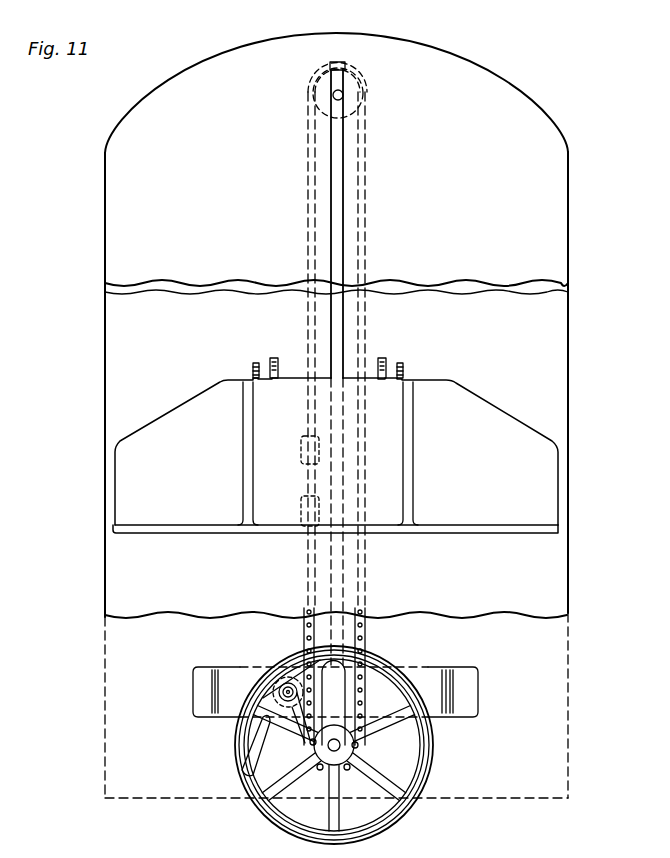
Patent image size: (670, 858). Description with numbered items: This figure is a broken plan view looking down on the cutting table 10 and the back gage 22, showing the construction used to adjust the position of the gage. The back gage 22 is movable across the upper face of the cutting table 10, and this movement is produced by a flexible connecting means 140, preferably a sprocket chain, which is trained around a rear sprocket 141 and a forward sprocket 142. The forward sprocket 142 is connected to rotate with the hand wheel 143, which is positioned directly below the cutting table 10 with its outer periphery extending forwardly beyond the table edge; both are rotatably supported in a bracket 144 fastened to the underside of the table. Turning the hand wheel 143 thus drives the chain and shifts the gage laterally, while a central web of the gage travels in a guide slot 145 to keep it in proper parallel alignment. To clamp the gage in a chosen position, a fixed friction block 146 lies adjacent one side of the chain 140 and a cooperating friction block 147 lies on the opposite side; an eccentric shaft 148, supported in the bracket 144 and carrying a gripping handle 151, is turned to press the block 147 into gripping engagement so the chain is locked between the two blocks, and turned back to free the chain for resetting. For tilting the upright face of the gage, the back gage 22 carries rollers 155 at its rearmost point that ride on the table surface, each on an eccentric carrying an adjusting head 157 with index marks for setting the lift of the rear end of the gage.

The cutting table 10 is at (556, 578).
The back gage 22 is at (473, 528).
The flexible connecting means 140 is at (303, 633).
The rear sprocket 141 is at (365, 80).
The forward sprocket 142 is at (358, 745).
The hand wheel 143 is at (432, 758).
The bracket 144 is at (470, 685).
The guide slot 145 is at (337, 342).
The fixed friction block 146 is at (316, 672).
The cooperating friction block 147 is at (293, 662).
The eccentric shaft 148 is at (311, 740).
The gripping handle 151 is at (260, 735).
The rollers 155 is at (290, 334).
The adjusting head 157 is at (253, 368).